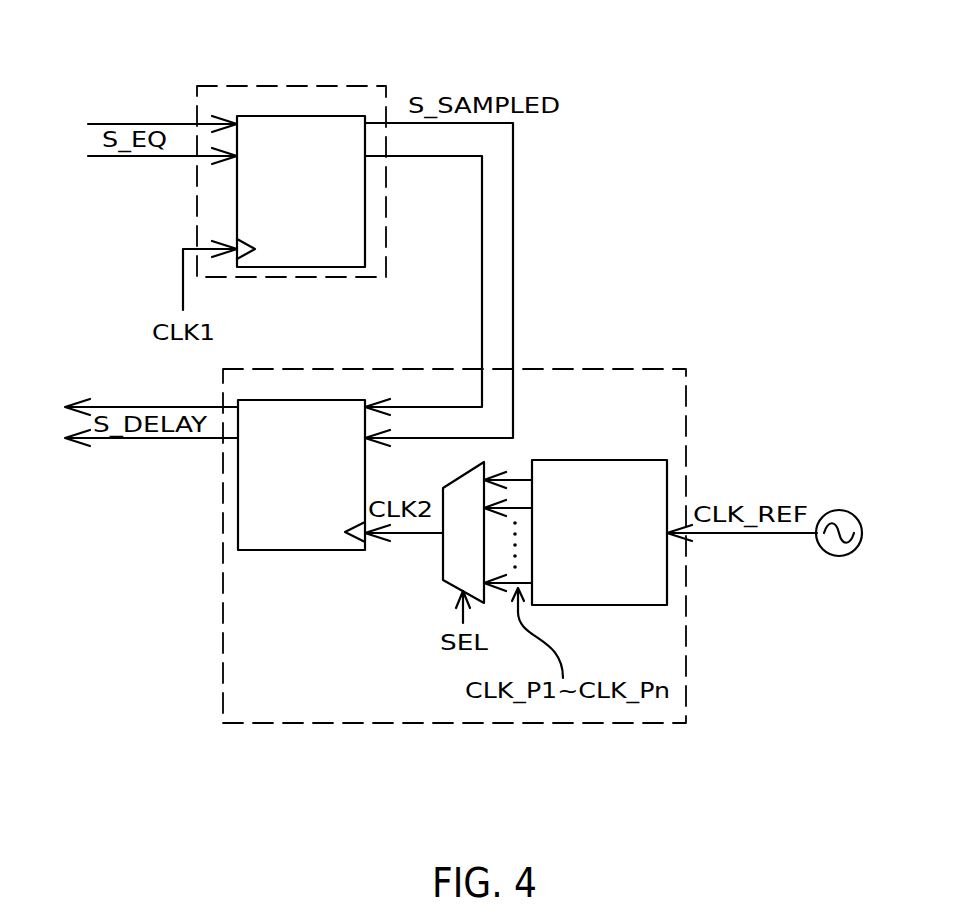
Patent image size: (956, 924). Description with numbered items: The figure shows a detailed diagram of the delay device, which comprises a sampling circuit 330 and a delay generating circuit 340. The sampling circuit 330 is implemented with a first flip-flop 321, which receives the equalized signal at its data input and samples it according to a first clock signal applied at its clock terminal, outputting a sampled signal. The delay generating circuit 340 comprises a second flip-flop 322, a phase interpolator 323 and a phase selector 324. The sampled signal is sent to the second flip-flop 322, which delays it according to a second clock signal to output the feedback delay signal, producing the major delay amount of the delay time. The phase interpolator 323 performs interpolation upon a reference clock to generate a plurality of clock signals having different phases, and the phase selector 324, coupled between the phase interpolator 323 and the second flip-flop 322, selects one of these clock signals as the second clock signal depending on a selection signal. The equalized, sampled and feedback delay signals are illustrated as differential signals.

The first flip-flop 321 is at (316, 116).
The second flip-flop 322 is at (298, 400).
The phase interpolator 323 is at (598, 460).
The phase selector 324 is at (443, 555).
The sampling circuit 330 is at (197, 206).
The delay generating circuit 340 is at (608, 369).